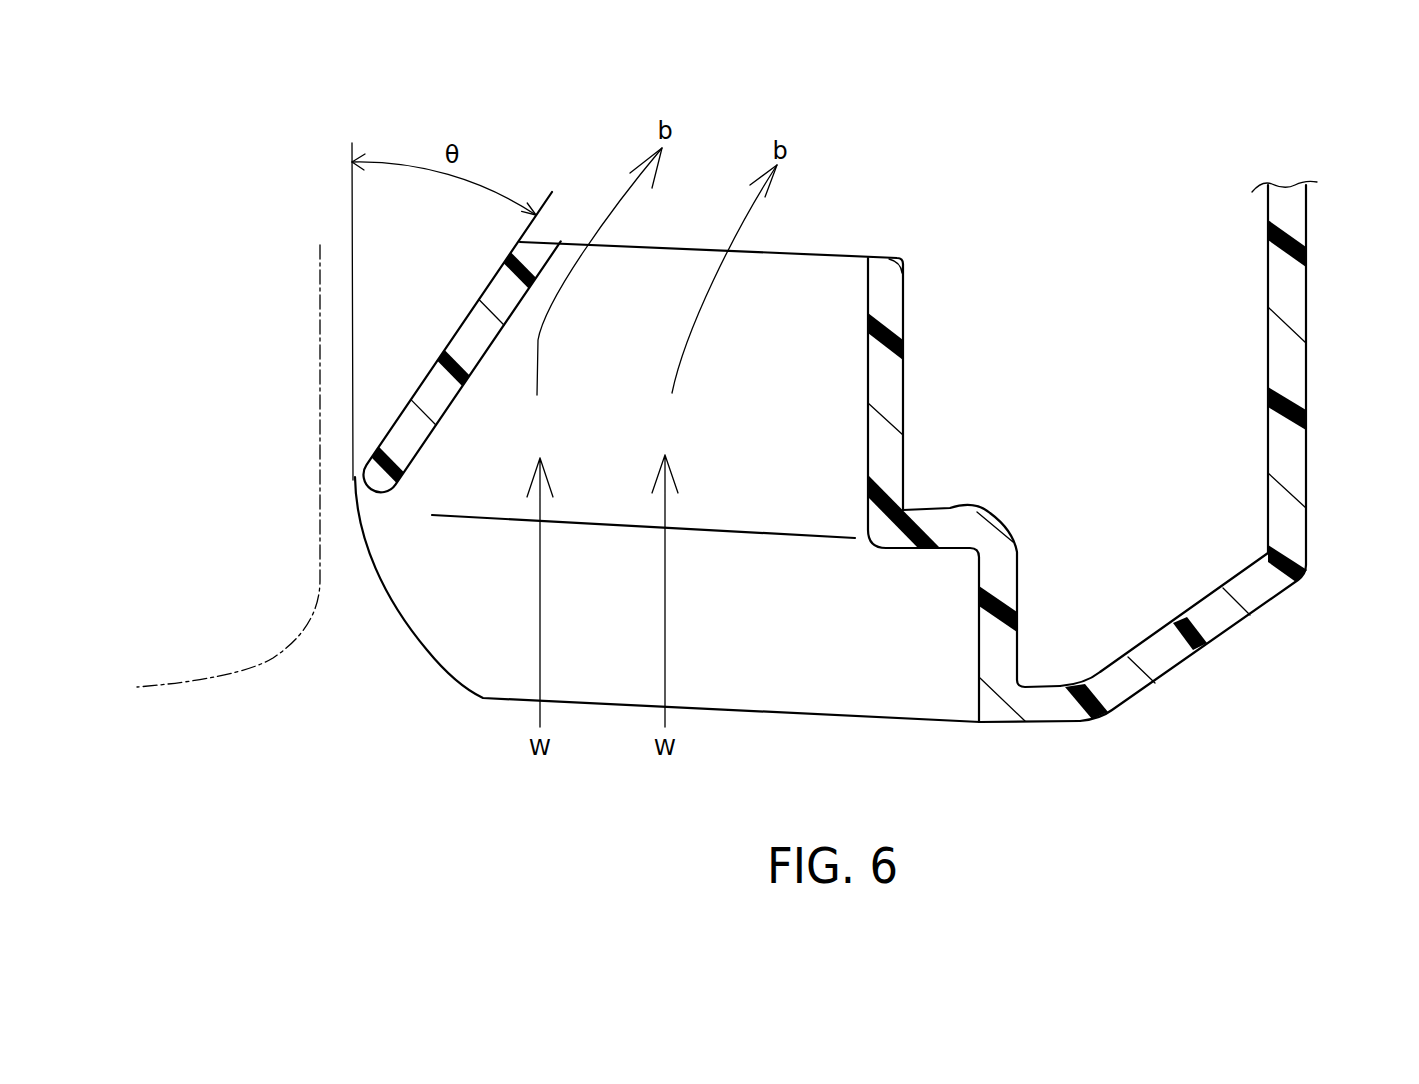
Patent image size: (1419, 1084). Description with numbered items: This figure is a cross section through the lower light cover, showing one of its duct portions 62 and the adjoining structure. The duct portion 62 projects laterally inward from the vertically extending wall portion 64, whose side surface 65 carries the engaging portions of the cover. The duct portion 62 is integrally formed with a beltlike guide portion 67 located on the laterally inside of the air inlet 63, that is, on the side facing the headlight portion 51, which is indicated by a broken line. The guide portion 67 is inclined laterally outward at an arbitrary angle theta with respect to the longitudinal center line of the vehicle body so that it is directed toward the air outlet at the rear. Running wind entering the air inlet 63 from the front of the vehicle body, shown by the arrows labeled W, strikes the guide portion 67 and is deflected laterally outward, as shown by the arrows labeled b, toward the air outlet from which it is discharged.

The headlight portion 51 is at (320, 444).
The duct portion 62 is at (923, 550).
The air inlet 63 is at (800, 262).
The wall portion 64 is at (1163, 663).
The side surface 65 is at (1295, 295).
The guide portion 67 is at (473, 325).